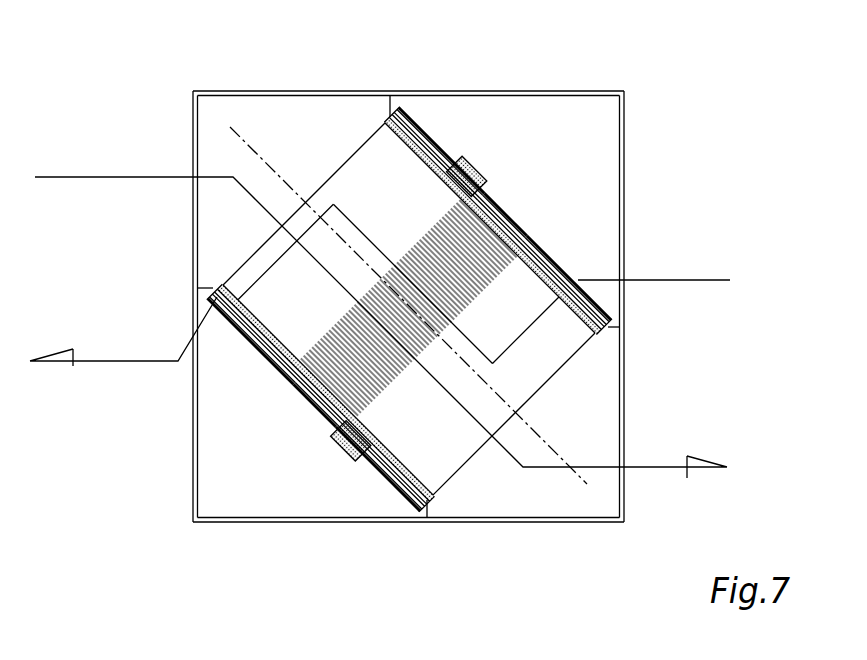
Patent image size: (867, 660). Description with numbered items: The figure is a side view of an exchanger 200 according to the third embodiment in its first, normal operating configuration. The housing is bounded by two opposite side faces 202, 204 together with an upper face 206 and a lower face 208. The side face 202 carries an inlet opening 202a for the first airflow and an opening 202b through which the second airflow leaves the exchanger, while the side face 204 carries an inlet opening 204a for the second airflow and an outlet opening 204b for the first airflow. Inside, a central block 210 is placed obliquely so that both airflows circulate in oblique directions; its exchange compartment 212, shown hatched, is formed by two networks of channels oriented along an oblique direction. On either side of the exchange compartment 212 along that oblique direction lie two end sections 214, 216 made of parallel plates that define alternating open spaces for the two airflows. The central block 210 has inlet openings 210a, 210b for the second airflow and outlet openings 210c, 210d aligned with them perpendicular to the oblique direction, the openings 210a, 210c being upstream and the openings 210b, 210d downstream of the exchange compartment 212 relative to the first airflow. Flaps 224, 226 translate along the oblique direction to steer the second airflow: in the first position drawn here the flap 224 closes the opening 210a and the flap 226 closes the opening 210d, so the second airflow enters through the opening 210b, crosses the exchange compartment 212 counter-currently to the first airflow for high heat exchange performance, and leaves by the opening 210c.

The exchanger 200 is at (441, 330).
The side face 202 is at (156, 306).
The inlet opening 202a is at (193, 149).
The opening 202b is at (193, 425).
The side face 204 is at (665, 306).
The inlet opening 204a is at (624, 152).
The outlet opening 204b is at (624, 418).
The upper face 206 is at (408, 92).
The lower face 208 is at (450, 524).
The central block 210 is at (399, 329).
The opening 210a is at (437, 143).
The opening 210b is at (560, 278).
The outlet opening 210c is at (248, 328).
The outlet opening 210d is at (390, 462).
The exchange compartment 212 is at (477, 240).
The end section 214 is at (363, 165).
The end section 216 is at (442, 458).
The flap 224 is at (487, 168).
The flap 226 is at (350, 440).